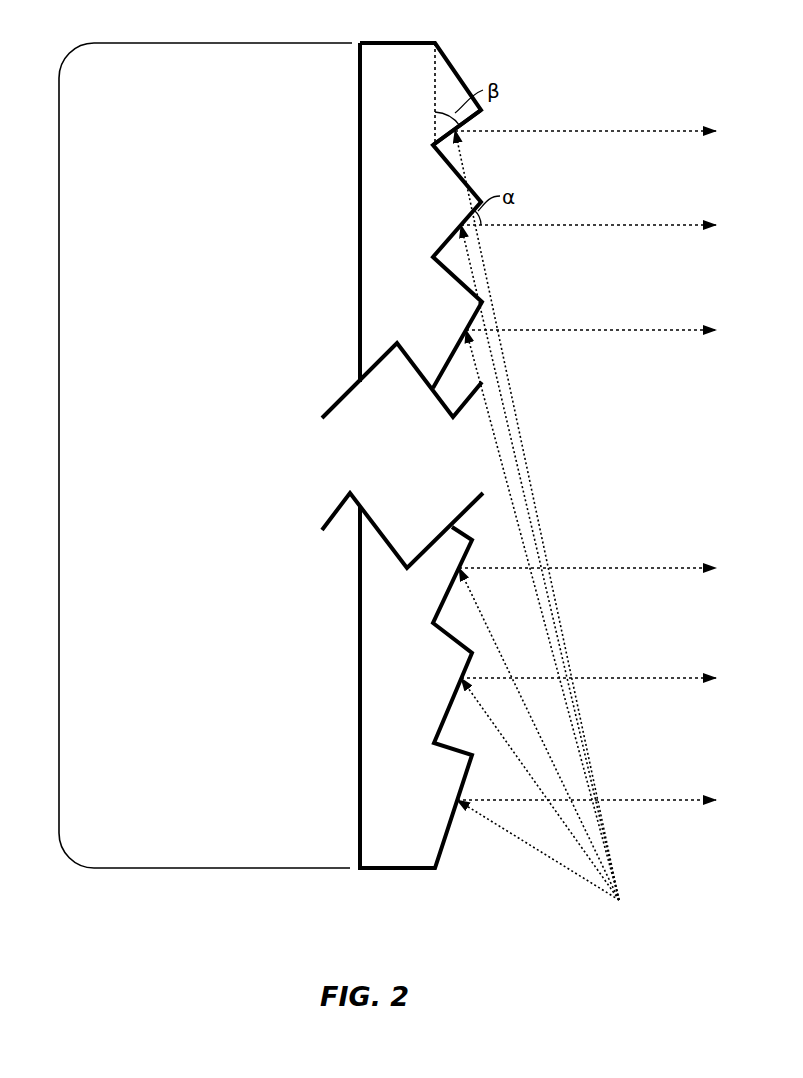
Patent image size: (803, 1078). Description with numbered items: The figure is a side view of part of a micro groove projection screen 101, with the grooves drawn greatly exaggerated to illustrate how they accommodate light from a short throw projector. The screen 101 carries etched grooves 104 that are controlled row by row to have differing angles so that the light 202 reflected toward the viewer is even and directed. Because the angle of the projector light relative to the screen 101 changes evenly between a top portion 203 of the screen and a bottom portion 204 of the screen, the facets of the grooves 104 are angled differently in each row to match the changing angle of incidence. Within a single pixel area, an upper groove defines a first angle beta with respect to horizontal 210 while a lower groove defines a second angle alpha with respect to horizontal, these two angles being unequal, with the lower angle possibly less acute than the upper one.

The micro groove projection screen 101 is at (195, 58).
The micro etched grooves 104 is at (433, 145).
The light 202 is at (558, 523).
The top portion of the projection screen 203 is at (355, 210).
The bottom portion of the projection screen 204 is at (355, 662).
The horizontal 210 is at (579, 131).